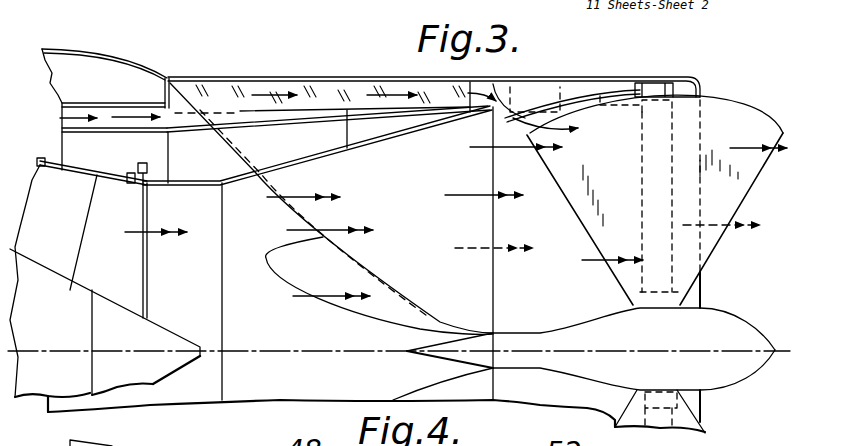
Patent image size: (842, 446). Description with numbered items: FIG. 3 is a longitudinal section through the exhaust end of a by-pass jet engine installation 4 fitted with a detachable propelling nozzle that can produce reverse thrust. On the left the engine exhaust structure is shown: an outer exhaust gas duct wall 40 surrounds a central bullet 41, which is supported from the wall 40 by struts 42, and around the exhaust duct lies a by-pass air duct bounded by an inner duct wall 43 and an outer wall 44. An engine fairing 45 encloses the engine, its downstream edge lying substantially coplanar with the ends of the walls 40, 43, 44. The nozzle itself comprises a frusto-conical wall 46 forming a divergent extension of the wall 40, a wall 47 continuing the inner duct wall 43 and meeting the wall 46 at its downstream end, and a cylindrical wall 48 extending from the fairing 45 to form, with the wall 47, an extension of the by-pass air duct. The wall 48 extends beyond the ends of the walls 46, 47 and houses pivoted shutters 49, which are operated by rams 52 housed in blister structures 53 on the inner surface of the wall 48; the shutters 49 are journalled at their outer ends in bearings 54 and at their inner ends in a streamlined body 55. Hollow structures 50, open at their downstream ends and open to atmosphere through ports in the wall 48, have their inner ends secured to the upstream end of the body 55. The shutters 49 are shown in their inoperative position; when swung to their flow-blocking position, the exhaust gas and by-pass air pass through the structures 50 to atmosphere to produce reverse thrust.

The propulsion unit 4 is at (348, 78).
The outer exhaust gas duct wall 40 is at (50, 158).
The central bullet 41 is at (38, 310).
The struts 42 is at (47, 210).
The inner duct wall 43 is at (60, 118).
The outer wall 44 is at (75, 102).
The engine fairing 45 is at (133, 61).
The frusto-conical wall 46 is at (360, 148).
The wall 47 is at (302, 110).
The cylindrical wall 48 is at (235, 78).
The pivoted shutters 49 is at (712, 140).
The hollow structures 50 is at (325, 205).
The rams 52 is at (545, 97).
The blister structures 53 is at (507, 90).
The bearings 54 is at (652, 83).
The streamlined body 55 is at (715, 323).